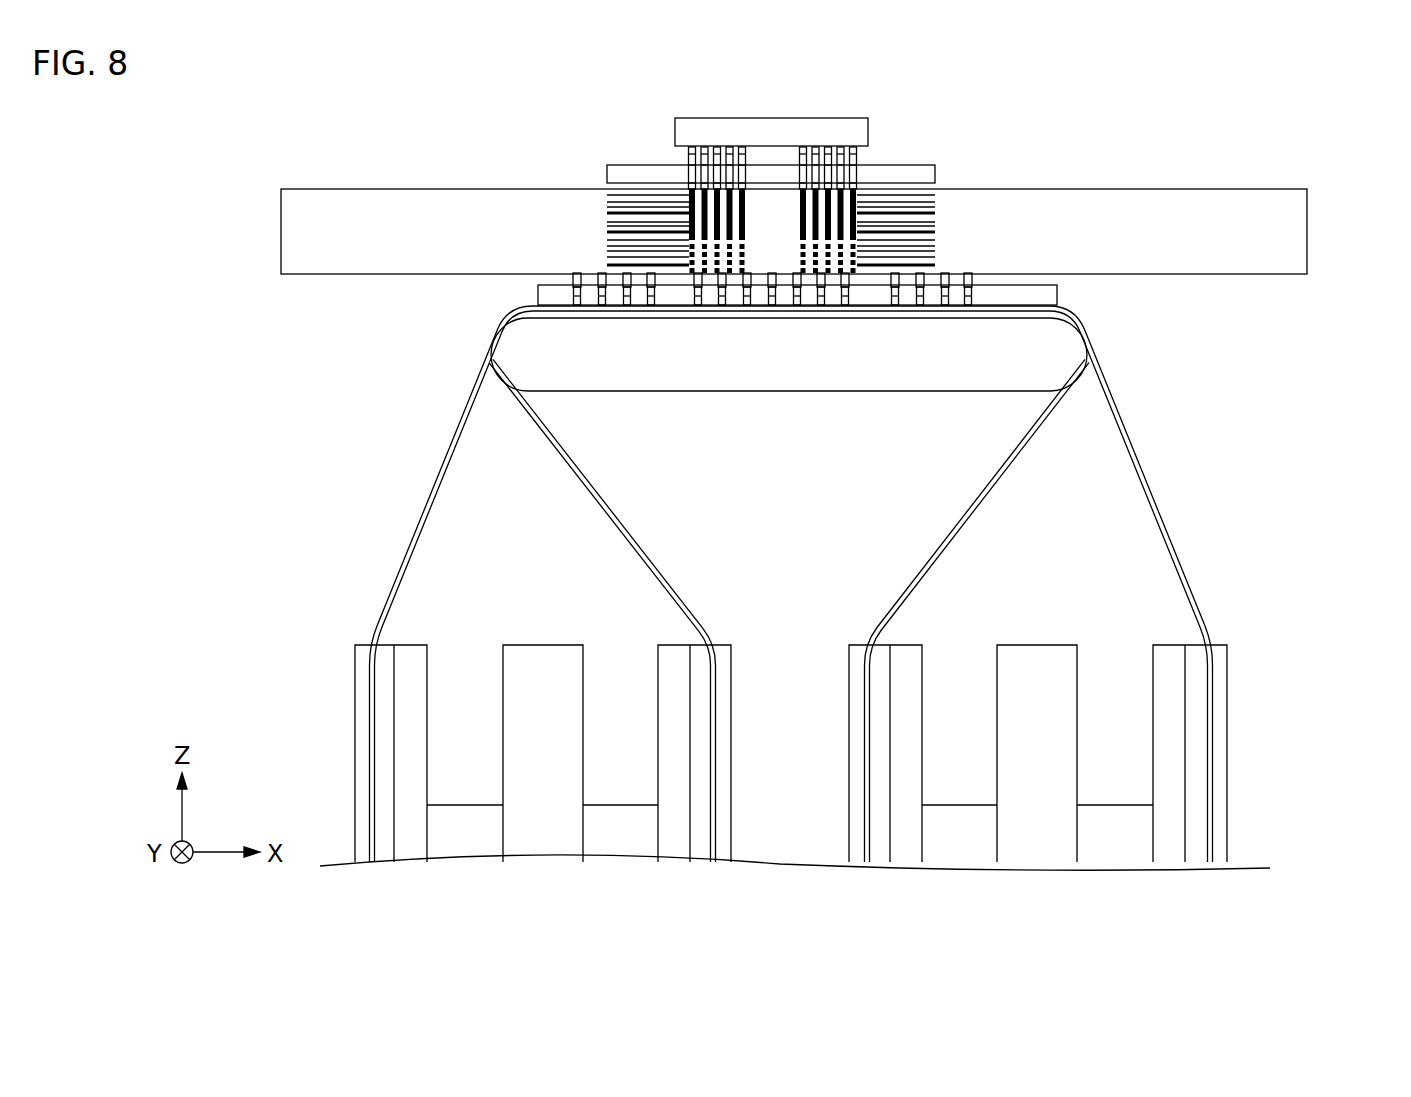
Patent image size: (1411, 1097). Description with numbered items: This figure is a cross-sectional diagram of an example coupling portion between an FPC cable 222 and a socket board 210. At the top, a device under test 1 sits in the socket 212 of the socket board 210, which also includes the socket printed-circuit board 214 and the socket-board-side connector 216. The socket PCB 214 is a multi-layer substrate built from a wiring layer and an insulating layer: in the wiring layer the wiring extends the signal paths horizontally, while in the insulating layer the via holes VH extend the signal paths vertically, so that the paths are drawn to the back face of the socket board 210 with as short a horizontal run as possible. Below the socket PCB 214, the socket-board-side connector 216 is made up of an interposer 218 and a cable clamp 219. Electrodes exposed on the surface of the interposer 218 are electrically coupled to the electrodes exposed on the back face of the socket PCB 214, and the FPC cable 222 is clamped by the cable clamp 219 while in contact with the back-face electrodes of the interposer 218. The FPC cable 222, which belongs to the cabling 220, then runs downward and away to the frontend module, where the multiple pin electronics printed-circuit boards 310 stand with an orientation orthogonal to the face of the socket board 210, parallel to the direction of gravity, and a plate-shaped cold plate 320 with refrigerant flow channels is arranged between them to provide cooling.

The electronic component 1 is at (868, 127).
The socket board 210 is at (845, 212).
The socket 212 is at (935, 172).
The socket printed-circuit board 214 is at (1225, 203).
The via holes VH is at (797, 228).
The socket-board-side connector 216 is at (893, 332).
The interposer 218 is at (1057, 295).
The cable clamp 219 is at (1053, 353).
The flexible wiring board 220 is at (774, 586).
The FPC cable 222 is at (427, 498).
The pin electronics printed-circuit board 310 is at (410, 652).
The cold plate 320 is at (540, 652).